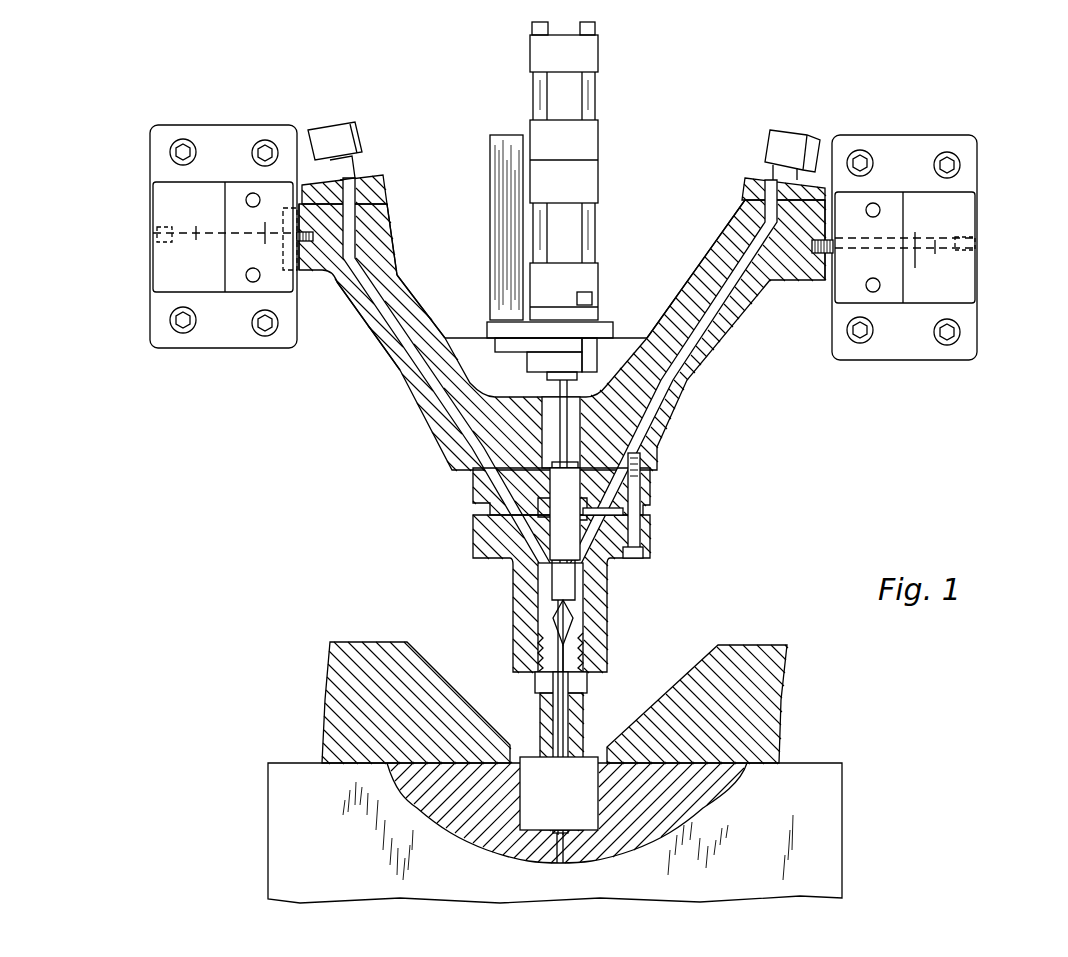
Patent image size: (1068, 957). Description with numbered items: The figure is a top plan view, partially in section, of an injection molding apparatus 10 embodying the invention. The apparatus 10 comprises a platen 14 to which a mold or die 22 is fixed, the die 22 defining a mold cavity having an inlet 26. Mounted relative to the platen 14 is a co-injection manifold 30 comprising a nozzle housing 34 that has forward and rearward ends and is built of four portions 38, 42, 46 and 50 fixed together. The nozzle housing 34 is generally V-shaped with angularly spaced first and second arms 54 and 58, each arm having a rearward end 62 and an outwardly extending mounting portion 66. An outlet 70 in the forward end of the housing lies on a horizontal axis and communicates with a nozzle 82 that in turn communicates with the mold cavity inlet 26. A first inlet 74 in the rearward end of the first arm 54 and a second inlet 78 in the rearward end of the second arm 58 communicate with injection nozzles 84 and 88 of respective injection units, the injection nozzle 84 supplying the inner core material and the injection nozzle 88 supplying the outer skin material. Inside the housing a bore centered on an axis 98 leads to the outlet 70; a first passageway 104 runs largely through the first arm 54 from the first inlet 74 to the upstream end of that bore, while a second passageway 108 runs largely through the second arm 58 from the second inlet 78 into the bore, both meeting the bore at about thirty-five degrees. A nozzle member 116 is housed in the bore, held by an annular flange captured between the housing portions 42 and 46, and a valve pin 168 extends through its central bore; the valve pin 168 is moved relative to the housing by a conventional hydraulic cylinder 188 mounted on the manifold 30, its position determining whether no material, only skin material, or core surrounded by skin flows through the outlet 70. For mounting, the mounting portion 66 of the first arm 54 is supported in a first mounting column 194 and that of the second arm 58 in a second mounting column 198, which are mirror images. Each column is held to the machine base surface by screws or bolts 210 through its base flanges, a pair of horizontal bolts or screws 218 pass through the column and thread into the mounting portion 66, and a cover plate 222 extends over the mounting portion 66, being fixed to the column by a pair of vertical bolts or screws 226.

The injection molding apparatus 10 is at (232, 458).
The platen 14 is at (760, 698).
The mold or die 22 is at (822, 800).
The mold cavity inlet 26 is at (556, 866).
The co-injection manifold 30 is at (707, 400).
The nozzle housing 34 is at (501, 563).
The housing portion 38 is at (410, 400).
The housing portion 42 is at (472, 495).
The housing portion 46 is at (473, 545).
The housing portion 50 is at (515, 635).
The first arm 54 is at (706, 240).
The second arm 58 is at (402, 285).
The rearward end 62 is at (400, 183).
The mounting portion 66 is at (340, 262).
The outlet 70 is at (577, 622).
The first inlet 74 is at (745, 205).
The second inlet 78 is at (382, 200).
The nozzle 82 is at (570, 737).
The injection nozzle 84 is at (785, 128).
The injection nozzle 88 is at (345, 130).
The axis 98 is at (555, 710).
The first passageway 104 is at (700, 335).
The second passageway 108 is at (392, 360).
The nozzle member 116 is at (580, 570).
The valve pin 168 is at (552, 572).
The hydraulic cylinder 188 is at (612, 118).
The first mounting column 194 is at (980, 205).
The second mounting column 198 is at (140, 222).
The screws or bolts 210 is at (262, 143).
The bolts or screws 218 is at (230, 240).
The cover plate 222 is at (258, 293).
The bolts or screws 226 is at (246, 202).